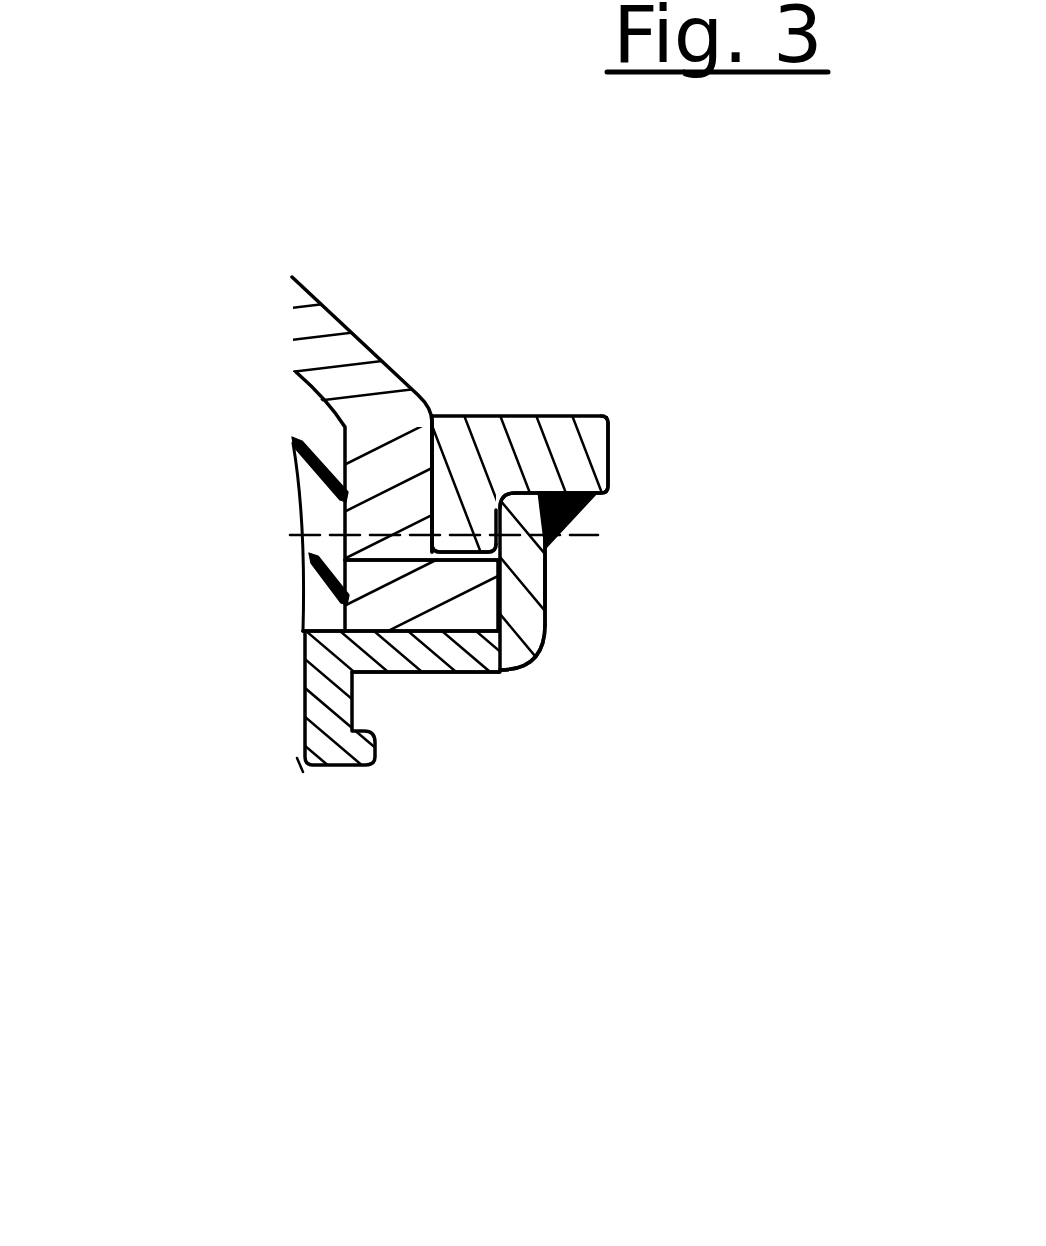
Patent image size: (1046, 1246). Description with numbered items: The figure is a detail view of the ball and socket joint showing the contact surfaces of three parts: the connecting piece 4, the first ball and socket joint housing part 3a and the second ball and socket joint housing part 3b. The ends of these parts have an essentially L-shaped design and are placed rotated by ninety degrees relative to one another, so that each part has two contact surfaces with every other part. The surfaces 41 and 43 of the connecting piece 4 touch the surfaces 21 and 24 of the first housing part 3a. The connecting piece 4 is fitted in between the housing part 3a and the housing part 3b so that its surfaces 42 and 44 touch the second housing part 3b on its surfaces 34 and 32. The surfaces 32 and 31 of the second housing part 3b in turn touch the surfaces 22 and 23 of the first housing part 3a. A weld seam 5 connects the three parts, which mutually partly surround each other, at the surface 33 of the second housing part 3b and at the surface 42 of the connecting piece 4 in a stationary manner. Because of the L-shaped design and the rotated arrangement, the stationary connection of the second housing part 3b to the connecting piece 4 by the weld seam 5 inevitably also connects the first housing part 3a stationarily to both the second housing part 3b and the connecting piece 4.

The first ball and socket joint housing part 3a is at (299, 278).
The second ball and socket joint housing part 3b is at (331, 782).
The connecting piece 4 is at (483, 406).
The weld seam 5 is at (572, 520).
The surface of the first ball and socket joint housing part 21 is at (432, 497).
The surface of the first ball and socket joint housing part 22 is at (490, 600).
The surface of the first ball and socket joint housing part 23 is at (445, 628).
The surface of the first ball and socket joint housing part 24 is at (440, 585).
The surface of the second ball and socket joint housing part 31 is at (443, 635).
The surface of the second ball and socket joint housing part 32 is at (507, 625).
The surface of the second ball and socket joint housing part 33 is at (643, 740).
The surface of the second ball and socket joint housing part 34 is at (553, 540).
The surface of the connecting piece 41 is at (463, 552).
The surface of the connecting piece 42 is at (528, 493).
The surface of the connecting piece 43 is at (345, 447).
The surface of the connecting piece 44 is at (440, 435).